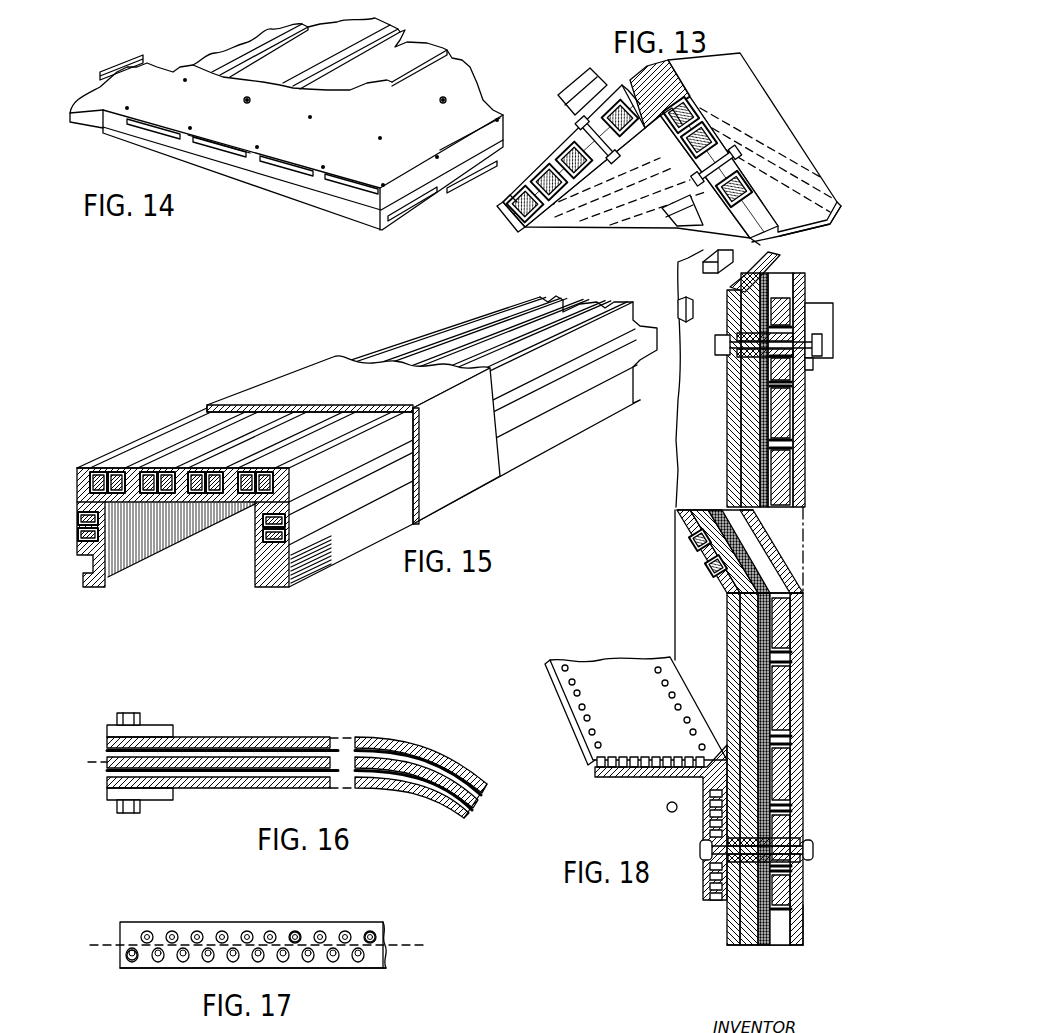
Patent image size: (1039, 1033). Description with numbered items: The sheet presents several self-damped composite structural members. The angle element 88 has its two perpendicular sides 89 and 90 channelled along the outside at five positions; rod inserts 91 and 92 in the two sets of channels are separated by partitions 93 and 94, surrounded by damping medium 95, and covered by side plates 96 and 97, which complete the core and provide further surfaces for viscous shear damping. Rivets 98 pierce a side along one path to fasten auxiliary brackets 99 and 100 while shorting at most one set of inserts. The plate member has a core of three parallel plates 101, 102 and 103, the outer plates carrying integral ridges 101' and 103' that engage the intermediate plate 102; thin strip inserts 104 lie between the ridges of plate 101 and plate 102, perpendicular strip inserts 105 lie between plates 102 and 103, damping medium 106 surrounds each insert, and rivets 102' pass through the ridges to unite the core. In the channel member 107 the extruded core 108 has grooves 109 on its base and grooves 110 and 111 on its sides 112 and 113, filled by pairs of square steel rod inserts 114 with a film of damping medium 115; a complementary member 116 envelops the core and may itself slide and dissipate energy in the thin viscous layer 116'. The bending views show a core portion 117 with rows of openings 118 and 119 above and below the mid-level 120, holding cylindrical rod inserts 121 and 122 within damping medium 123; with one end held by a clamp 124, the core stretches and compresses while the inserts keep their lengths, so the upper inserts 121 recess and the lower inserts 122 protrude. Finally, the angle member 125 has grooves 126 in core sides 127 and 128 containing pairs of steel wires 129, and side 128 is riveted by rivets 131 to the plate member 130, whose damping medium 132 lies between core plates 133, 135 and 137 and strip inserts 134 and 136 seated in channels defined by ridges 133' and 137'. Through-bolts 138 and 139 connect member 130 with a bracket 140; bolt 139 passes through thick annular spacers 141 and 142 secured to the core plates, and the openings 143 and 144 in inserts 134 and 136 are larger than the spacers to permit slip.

In FIG. 13, the angle element 88 is at (723, 65).
In FIG. 13, the side 89 is at (583, 202).
In FIG. 13, the side 90 is at (810, 222).
In FIG. 13, the rod inserts 91 is at (627, 102).
In FIG. 13, the rod inserts 92 is at (687, 97).
In FIG. 13, the partitions 93 is at (533, 175).
In FIG. 13, the partitions 94 is at (705, 142).
In FIG. 13, the damping medium 95 is at (537, 225).
In FIG. 13, the side plate 96 is at (803, 172).
In FIG. 13, the side plate 97 is at (522, 183).
In FIG. 13, the rivets 98 is at (733, 153).
In FIG. 13, the auxiliary bracket 99 is at (690, 208).
In FIG. 13, the auxiliary bracket 100 is at (575, 88).
In FIG. 14, the core plate 101 is at (286, 119).
In FIG. 14, the ridges 101' is at (235, 136).
In FIG. 14, the intermediate plate 102 is at (303, 175).
In FIG. 14, the rivets 102' is at (356, 91).
In FIG. 14, the core plate 103 is at (303, 181).
In FIG. 14, the ridges 103' is at (467, 149).
In FIG. 14, the strip inserts 104 is at (362, 33).
In FIG. 14, the strip inserts 105 is at (83, 110).
In FIG. 14, the damping medium 106 is at (343, 190).
In FIG. 15, the channel member 107 is at (195, 397).
In FIG. 15, the core 108 is at (270, 582).
In FIG. 15, the grooves 109 is at (220, 500).
In FIG. 15, the grooves 110 is at (88, 545).
In FIG. 15, the grooves 111 is at (261, 530).
In FIG. 15, the side 112 is at (163, 559).
In FIG. 15, the side 113 is at (257, 554).
In FIG. 15, the rod inserts 114 is at (160, 472).
In FIG. 15, the damping medium 115 is at (177, 440).
In FIG. 15, the core member 116 is at (348, 384).
In FIG. 15, the viscous medium layer 116' is at (456, 446).
In FIG. 16, the core portion 117 is at (200, 742).
In FIG. 17, the core portion 117 is at (237, 925).
In FIG. 16, the openings 118 is at (443, 755).
In FIG. 17, the openings 118 is at (368, 932).
In FIG. 16, the openings 119 is at (232, 783).
In FIG. 17, the openings 119 is at (183, 953).
In FIG. 16, the mid-level 120 is at (507, 822).
In FIG. 17, the mid-level 120 is at (265, 945).
In FIG. 16, the rod inserts 121 is at (387, 753).
In FIG. 17, the rod inserts 121 is at (197, 935).
In FIG. 16, the rod inserts 122 is at (303, 775).
In FIG. 17, the rod inserts 122 is at (333, 955).
In FIG. 16, the damping medium 123 is at (463, 770).
In FIG. 17, the damping medium 123 is at (132, 950).
In FIG. 16, the clamp 124 is at (140, 733).
In FIG. 18, the damped structural member 125 is at (620, 605).
In FIG. 18, the grooves 126 is at (603, 777).
In FIG. 18, the core side 127 is at (643, 775).
In FIG. 18, the core side 128 is at (700, 836).
In FIG. 18, the steel wires 129 is at (597, 764).
In FIG. 18, the structural plate member 130 is at (660, 522).
In FIG. 18, the rivets 131 is at (703, 900).
In FIG. 18, the damping medium 132 is at (738, 422).
In FIG. 18, the core plate member 133 is at (746, 610).
In FIG. 18, the plate ridges 133' is at (704, 564).
In FIG. 18, the strip insert members 134 is at (743, 927).
In FIG. 18, the core plate member 135 is at (760, 673).
In FIG. 18, the strip insert members 136 is at (778, 913).
In FIG. 18, the core plate member 137 is at (760, 609).
In FIG. 18, the plate ridges 137' is at (807, 769).
In FIG. 18, the through-bolt 138 is at (677, 303).
In FIG. 18, the through-bolt 139 is at (715, 346).
In FIG. 18, the bracket 140 is at (807, 330).
In FIG. 18, the spacer 141 is at (732, 355).
In FIG. 18, the spacer 142 is at (810, 369).
In FIG. 18, the opening 143 is at (750, 328).
In FIG. 18, the opening 144 is at (788, 277).